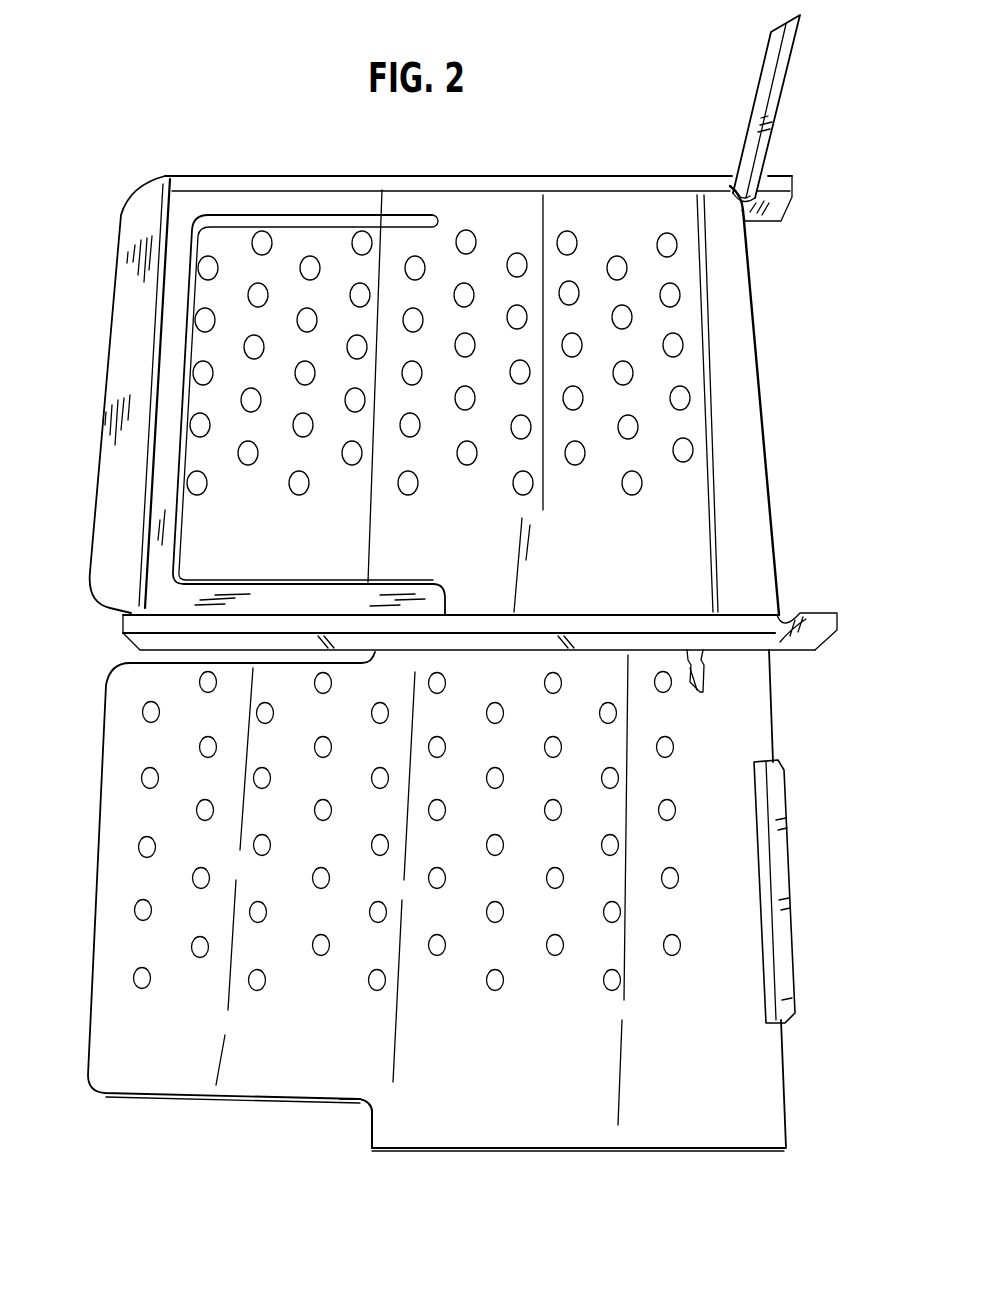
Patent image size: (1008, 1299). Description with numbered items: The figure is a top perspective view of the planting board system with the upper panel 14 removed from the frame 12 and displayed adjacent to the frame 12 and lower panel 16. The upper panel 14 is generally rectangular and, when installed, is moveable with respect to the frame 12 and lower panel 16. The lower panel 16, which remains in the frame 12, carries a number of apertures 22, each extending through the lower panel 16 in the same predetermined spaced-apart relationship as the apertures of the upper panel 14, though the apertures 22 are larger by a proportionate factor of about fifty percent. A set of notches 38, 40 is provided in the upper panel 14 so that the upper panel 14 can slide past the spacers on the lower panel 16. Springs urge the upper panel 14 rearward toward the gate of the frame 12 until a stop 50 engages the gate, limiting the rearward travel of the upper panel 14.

The frame 12 is at (105, 204).
The upper panel 14 is at (785, 1095).
The lower panel 16 is at (766, 477).
The apertures 22 is at (678, 248).
The notch 38 is at (344, 1123).
The notch 40 is at (110, 651).
The stop 50 is at (705, 672).